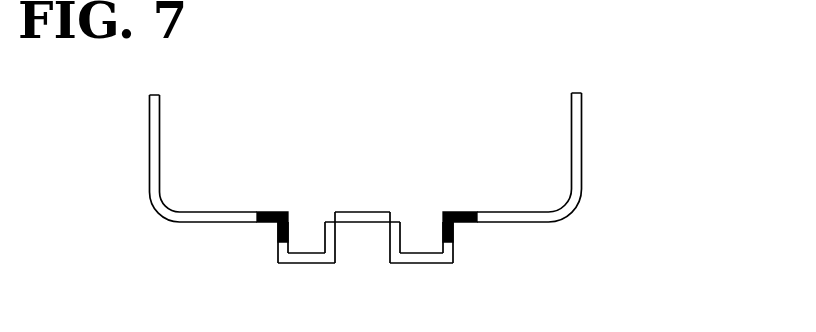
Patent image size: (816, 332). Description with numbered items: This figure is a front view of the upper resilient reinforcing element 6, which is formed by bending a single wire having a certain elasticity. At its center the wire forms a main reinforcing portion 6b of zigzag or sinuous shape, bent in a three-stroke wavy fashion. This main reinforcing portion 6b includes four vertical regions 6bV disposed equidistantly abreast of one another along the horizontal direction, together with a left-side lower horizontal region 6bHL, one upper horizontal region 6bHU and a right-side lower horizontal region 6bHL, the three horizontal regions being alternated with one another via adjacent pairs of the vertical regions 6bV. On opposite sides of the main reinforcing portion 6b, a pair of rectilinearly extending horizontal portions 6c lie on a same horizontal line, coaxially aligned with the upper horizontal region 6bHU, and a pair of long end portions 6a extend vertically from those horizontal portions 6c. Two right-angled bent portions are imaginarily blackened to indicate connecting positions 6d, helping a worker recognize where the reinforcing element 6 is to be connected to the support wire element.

The upper resilient reinforcing element 6 is at (655, 167).
The long end portion 6a is at (150, 117).
The main reinforcing portion 6b is at (454, 287).
The vertical region 6bV is at (324, 230).
The upper horizontal region 6bHU is at (367, 212).
The lower horizontal region 6bHL is at (295, 263).
The horizontal portion 6c is at (197, 212).
The connecting position 6d is at (264, 193).